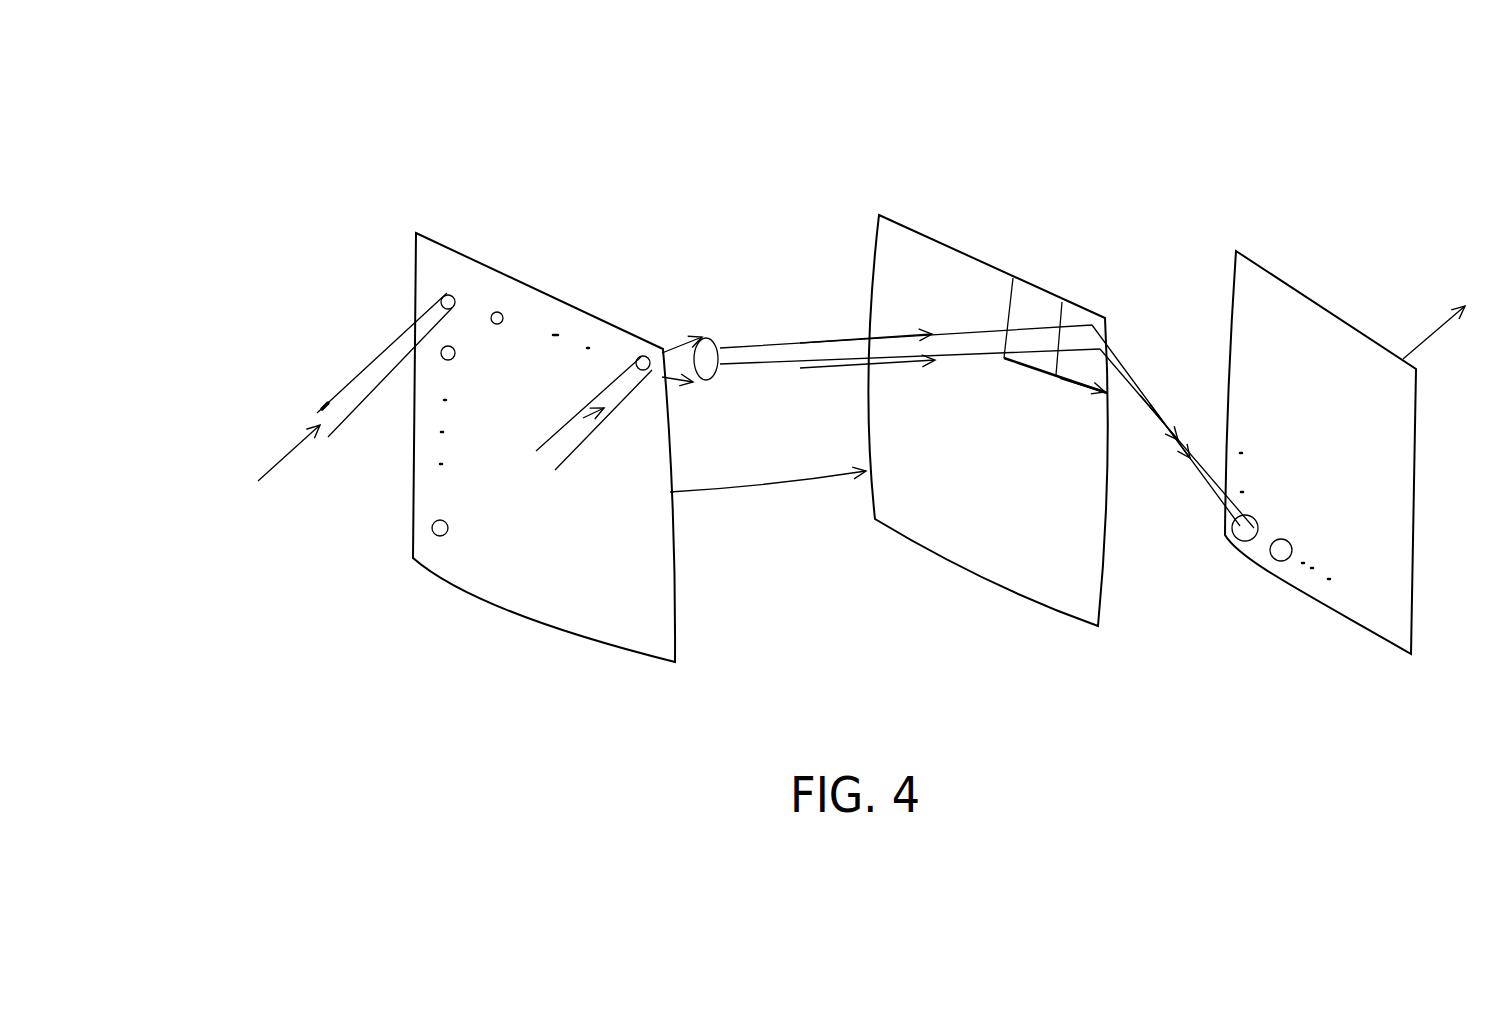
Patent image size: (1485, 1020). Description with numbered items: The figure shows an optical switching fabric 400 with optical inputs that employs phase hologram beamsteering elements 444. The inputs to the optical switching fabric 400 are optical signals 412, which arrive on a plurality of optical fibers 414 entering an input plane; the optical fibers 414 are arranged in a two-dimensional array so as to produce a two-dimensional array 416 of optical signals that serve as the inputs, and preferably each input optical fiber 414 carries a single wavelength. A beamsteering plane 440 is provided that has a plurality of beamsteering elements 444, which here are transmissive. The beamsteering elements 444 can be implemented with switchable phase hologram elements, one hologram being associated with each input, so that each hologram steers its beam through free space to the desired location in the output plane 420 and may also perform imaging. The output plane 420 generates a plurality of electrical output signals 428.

The optical switching fabric 400 is at (442, 84).
The optical signals 412 is at (260, 468).
The optical fibers 414 is at (606, 448).
The two-dimensional array of optical signals 416 is at (738, 487).
The output plane 420 is at (1327, 309).
The electrical output signals 428 is at (1436, 331).
The beamsteering plane 440 is at (897, 218).
The beamsteering elements 444 is at (1073, 305).